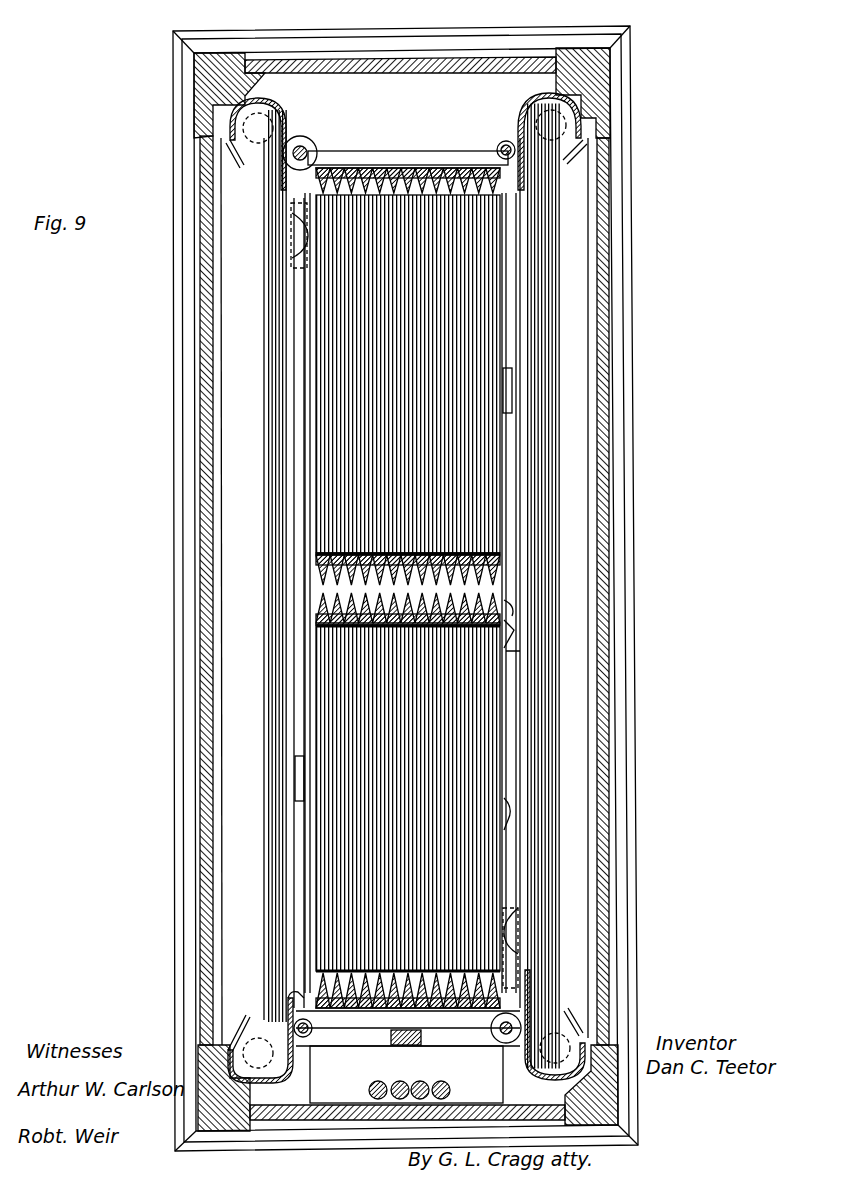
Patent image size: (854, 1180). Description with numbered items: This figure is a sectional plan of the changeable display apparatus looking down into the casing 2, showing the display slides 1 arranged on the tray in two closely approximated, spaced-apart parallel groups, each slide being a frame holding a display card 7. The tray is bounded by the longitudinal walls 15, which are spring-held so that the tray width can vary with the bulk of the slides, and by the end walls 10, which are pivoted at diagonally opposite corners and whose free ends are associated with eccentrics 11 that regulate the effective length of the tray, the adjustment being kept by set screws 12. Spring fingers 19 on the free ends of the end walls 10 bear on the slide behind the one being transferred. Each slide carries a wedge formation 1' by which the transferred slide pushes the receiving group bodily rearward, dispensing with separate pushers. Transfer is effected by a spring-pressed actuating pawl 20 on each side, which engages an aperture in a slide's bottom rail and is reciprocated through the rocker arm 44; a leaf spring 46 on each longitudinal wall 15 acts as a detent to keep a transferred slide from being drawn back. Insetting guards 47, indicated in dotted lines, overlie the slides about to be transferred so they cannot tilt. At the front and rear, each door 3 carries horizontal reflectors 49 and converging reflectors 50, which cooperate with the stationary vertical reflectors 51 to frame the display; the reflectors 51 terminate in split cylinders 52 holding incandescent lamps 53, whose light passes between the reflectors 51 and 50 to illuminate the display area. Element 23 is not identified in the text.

The display slides 1 is at (408, 586).
The wedge formation 1' is at (368, 583).
The casing 2 is at (600, 73).
The door 3 is at (192, 410).
The display cards 7 is at (320, 370).
The end walls of the tray 10 is at (216, 627).
The eccentrics 11 is at (308, 140).
The set screws 12 is at (272, 172).
The longitudinal walls of the tray 15 is at (298, 432).
The spring fingers 19 is at (286, 226).
The actuating pawl 20 is at (506, 622).
The latch spring 23 is at (506, 598).
The rocker arm 44 is at (505, 812).
The leaf spring 46 is at (300, 762).
The insetting guard 47 is at (288, 290).
The horizontal reflectors 49 is at (255, 733).
The inwardly converging reflectors 50 is at (250, 150).
The stationary vertical reflectors 51 is at (281, 994).
The split cylinders 52 is at (276, 108).
The incandescent lamps 53 is at (200, 126).